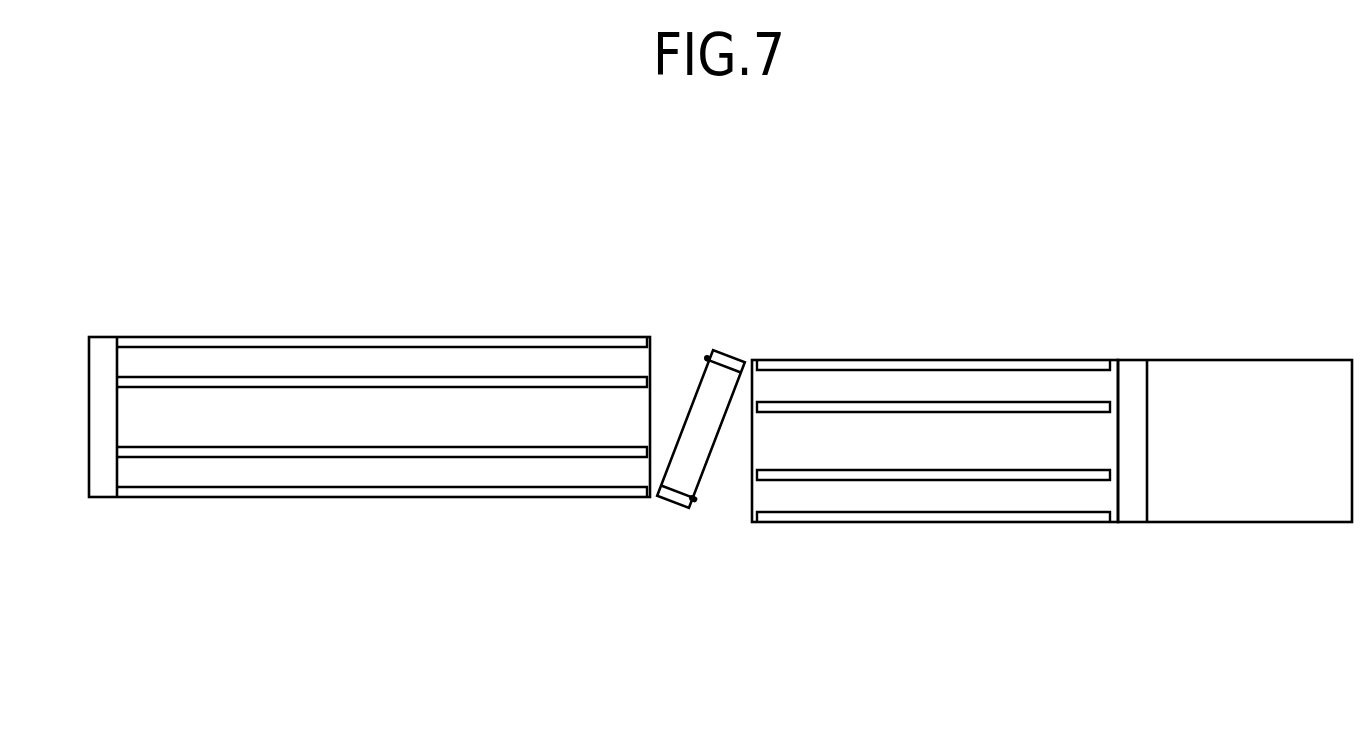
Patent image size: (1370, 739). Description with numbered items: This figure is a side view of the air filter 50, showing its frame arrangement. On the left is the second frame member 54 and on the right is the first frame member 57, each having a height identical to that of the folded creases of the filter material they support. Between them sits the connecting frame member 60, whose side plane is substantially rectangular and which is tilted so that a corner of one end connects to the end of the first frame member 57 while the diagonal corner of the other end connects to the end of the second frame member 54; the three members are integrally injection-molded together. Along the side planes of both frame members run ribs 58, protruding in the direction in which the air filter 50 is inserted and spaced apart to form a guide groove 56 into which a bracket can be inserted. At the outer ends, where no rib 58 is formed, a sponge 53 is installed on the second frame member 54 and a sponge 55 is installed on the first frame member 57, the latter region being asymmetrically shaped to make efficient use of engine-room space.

The air filter 50 is at (322, 280).
The sponge 53 is at (88, 336).
The second frame member 54 is at (307, 418).
The sponge 55 is at (1130, 435).
The guide groove 56 is at (203, 475).
The first frame member 57 is at (927, 435).
The rib 58 is at (1005, 475).
The connecting frame member 60 is at (707, 437).